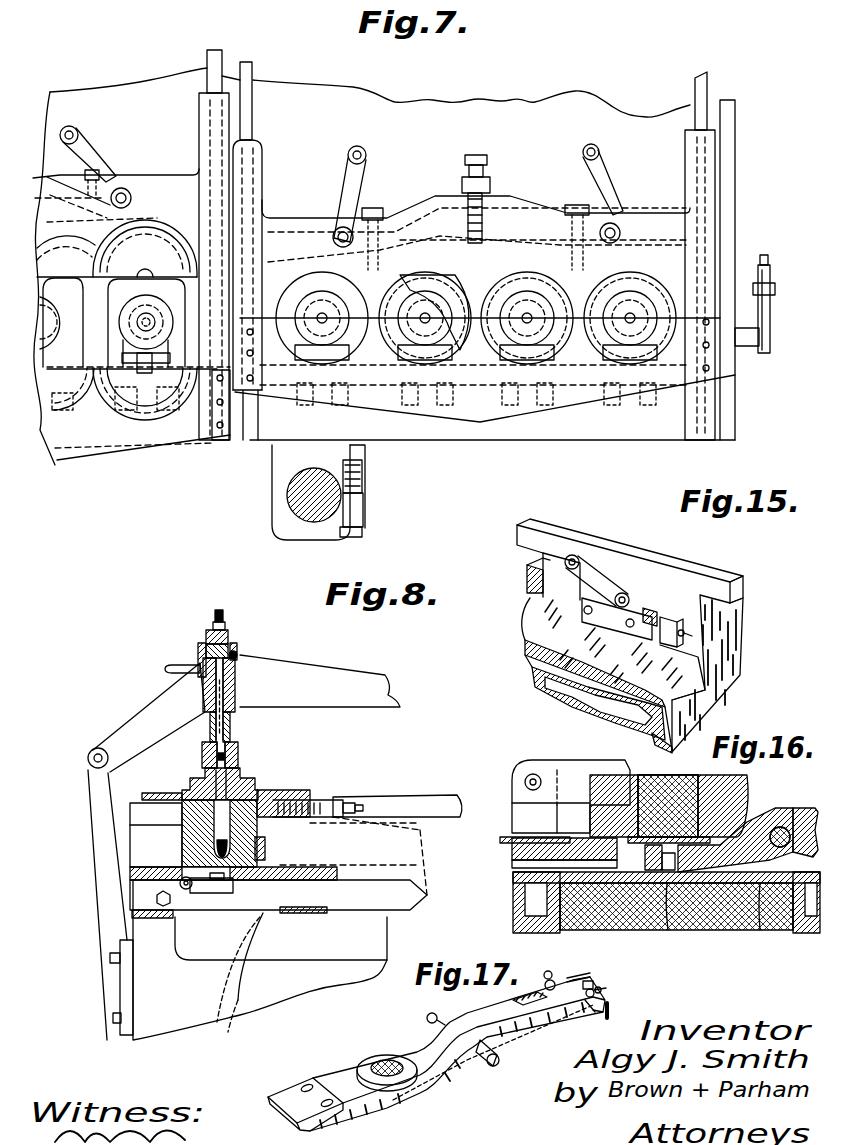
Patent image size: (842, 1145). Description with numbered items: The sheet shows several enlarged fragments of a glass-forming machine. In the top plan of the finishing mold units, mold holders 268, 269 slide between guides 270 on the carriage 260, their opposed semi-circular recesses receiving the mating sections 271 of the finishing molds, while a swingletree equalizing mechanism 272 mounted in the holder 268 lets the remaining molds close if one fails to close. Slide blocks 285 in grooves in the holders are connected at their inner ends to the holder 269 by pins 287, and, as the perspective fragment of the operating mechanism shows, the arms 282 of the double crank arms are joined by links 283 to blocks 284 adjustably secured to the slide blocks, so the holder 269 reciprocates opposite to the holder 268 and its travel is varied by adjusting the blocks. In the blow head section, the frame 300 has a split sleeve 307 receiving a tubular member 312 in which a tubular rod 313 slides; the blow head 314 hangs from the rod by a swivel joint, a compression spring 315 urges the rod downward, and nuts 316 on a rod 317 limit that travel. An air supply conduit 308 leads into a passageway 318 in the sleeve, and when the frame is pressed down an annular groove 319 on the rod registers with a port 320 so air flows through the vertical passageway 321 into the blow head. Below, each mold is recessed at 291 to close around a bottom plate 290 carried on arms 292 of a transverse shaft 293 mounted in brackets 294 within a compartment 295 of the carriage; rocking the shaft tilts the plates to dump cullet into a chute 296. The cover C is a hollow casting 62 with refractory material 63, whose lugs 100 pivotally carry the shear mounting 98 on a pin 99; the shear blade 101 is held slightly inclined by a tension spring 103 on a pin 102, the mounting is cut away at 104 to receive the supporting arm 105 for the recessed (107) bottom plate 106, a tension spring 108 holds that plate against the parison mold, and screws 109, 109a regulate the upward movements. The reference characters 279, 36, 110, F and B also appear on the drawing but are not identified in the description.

In FIG. 7, the slide blocks 285 is at (247, 72).
In FIG. 15, the slide blocks 285 is at (660, 585).
In FIG. 7, the pivoted arm 279 is at (363, 162).
In FIG. 7, the mold holder 268 is at (295, 222).
In FIG. 7, the swingletree equalizing mechanism 272 is at (497, 243).
In FIG. 7, the mating sections of the finishing molds 271 is at (650, 277).
In FIG. 7, the bottom plate 290 is at (165, 315).
In FIG. 8, the bottom plate 290 is at (233, 867).
In FIG. 7, the pins 287 is at (710, 323).
In FIG. 7, the mold holder 269 is at (693, 370).
In FIG. 7, the guides 270 is at (242, 433).
In FIG. 7, the carriage 260 is at (438, 435).
In FIG. 8, the carriage 260 is at (437, 790).
In FIG. 15, the arms of double crank arms 282 is at (543, 568).
In FIG. 15, the links 283 is at (585, 568).
In FIG. 15, the blocks 284 is at (602, 618).
In FIG. 8, the nuts 316 is at (222, 612).
In FIG. 8, the rod 317 is at (225, 622).
In FIG. 8, the tubular rod 313 is at (233, 633).
In FIG. 8, the tubular member 312 is at (233, 646).
In FIG. 8, the compression spring 315 is at (238, 657).
In FIG. 8, the split sleeve 307 is at (200, 653).
In FIG. 8, the air supply conduit 308 is at (167, 672).
In FIG. 8, the port 320 is at (205, 685).
In FIG. 8, the passageway 318 is at (207, 692).
In FIG. 8, the annular groove 319 is at (227, 685).
In FIG. 8, the vertical passageway 321 is at (232, 733).
In FIG. 8, the blow head 314 is at (240, 758).
In FIG. 8, the frame 300 is at (358, 672).
In FIG. 8, the recess 291 is at (258, 855).
In FIG. 8, the brackets 294 is at (183, 880).
In FIG. 8, the arms 292 is at (207, 893).
In FIG. 8, the transverse shaft 293 is at (187, 893).
In FIG. 8, the compartment 295 is at (322, 897).
In FIG. 8, the cullet chute 296 is at (277, 948).
In FIG. 16, the shear mounting 98 is at (743, 803).
In FIG. 17, the shear mounting 98 is at (443, 1093).
In FIG. 16, the pin 99 is at (773, 826).
In FIG. 17, the pin 99 is at (493, 1067).
In FIG. 16, the lugs 100 is at (792, 857).
In FIG. 16, the shear blade 101 is at (503, 838).
In FIG. 17, the shear blade 101 is at (283, 1097).
In FIG. 16, the frame member 36 is at (515, 914).
In FIG. 16, the bottom plate 106 is at (640, 930).
In FIG. 17, the bottom plate 106 is at (367, 1058).
In FIG. 16, the refractory material 63 is at (727, 920).
In FIG. 16, the supporting arm 105 is at (760, 920).
In FIG. 17, the supporting arm 105 is at (453, 1032).
In FIG. 16, the cover plate member 62 is at (800, 923).
In FIG. 17, the pin 102 is at (580, 975).
In FIG. 17, the tension spring 103 is at (590, 981).
In FIG. 17, the screw 109a is at (547, 977).
In FIG. 17, the adjusting screw 109 is at (600, 988).
In FIG. 17, the tension spring 108 is at (612, 1005).
In FIG. 17, the end portion 110 is at (587, 1013).
In FIG. 17, the cut-away portion 104 is at (510, 1013).
In FIG. 17, the recess 107 is at (387, 1068).
In FIG. 7, the feed mechanism F is at (600, 355).
In FIG. 8, the feed mechanism F is at (195, 773).
In FIG. 16, the die block B is at (627, 778).
In FIG. 16, the cover C is at (647, 932).